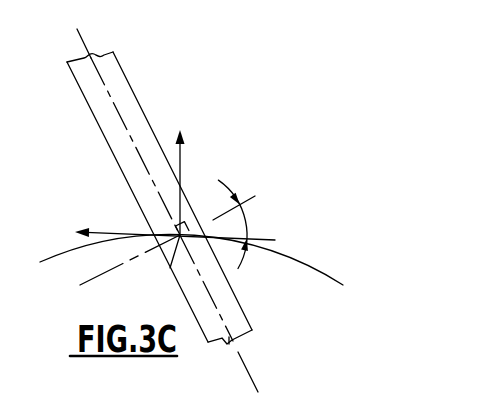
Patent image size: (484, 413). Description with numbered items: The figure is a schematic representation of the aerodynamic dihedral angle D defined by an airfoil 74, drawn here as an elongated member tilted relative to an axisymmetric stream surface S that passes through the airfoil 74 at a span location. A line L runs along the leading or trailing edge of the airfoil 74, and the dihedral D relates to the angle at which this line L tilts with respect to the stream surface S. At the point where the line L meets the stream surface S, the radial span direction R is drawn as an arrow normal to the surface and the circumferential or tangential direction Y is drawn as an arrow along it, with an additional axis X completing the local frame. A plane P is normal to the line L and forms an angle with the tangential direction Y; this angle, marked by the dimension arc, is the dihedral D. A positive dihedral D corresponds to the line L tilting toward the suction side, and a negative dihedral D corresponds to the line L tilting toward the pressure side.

The airfoil 74 is at (150, 96).
The line along the leading or trailing edge L is at (250, 375).
The X axis X is at (170, 268).
The tangential direction Y is at (167, 227).
The radial span direction R is at (183, 160).
The plane normal to the line P is at (243, 201).
The dihedral angle D is at (247, 227).
The axisymmetric stream surface S is at (304, 256).